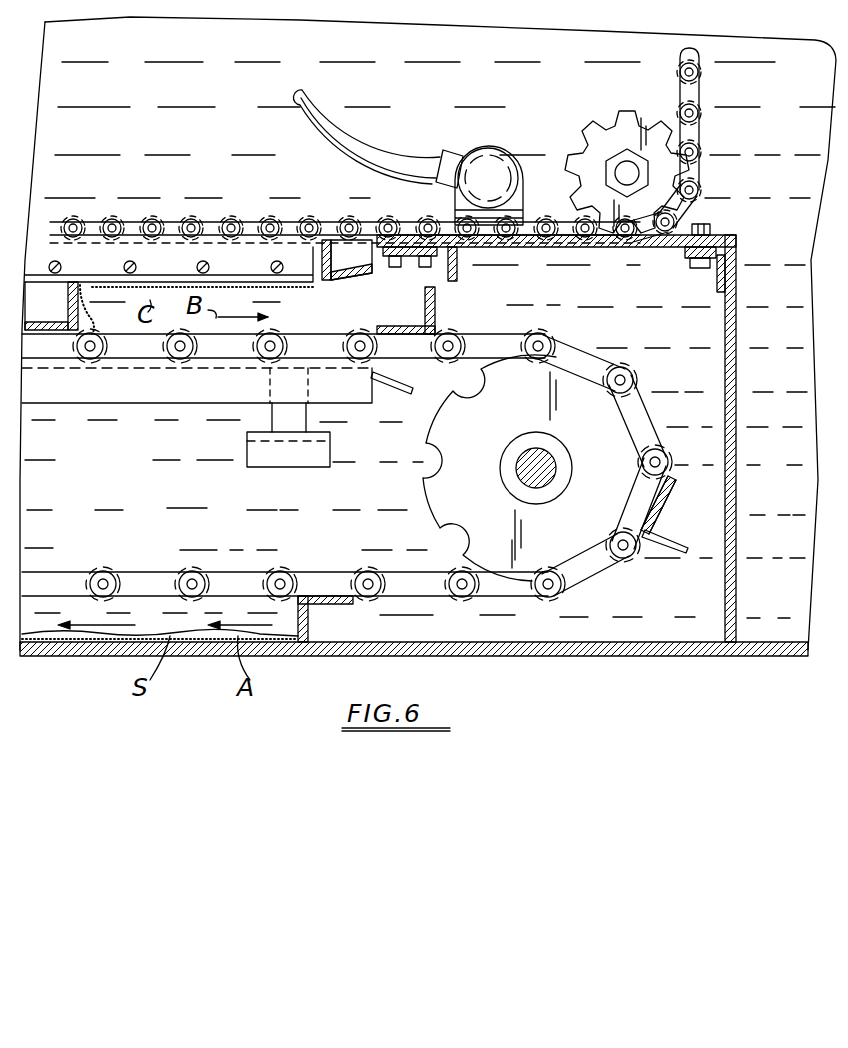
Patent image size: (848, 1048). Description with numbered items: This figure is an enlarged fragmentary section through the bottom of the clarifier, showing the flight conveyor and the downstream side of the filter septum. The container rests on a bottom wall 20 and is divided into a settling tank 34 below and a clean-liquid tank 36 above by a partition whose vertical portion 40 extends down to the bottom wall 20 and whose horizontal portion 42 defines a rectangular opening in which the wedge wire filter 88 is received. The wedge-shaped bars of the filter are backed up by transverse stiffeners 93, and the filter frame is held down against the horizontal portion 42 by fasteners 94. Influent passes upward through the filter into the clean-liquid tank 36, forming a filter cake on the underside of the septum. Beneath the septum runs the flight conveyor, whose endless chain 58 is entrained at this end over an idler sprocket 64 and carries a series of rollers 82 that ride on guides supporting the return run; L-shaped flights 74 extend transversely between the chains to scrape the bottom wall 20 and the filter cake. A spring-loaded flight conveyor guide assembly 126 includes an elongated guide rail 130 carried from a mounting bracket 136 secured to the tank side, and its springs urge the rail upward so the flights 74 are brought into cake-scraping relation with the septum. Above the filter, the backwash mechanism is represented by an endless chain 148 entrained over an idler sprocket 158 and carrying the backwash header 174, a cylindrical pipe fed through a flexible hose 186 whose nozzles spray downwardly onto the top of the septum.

The bottom wall 20 is at (548, 656).
The settling tank 34 is at (175, 491).
The clean-liquid tank 36 is at (237, 139).
The vertical portion of partition 40 is at (737, 597).
The horizontal portion of partition 42 is at (667, 250).
The endless chain 58 is at (65, 580).
The idler sprocket 64 is at (506, 468).
The flights 74 is at (68, 300).
The rollers 82 is at (187, 568).
The wedge wire filter 88 is at (80, 250).
The transverse stiffeners 93 is at (199, 263).
The fasteners 94 is at (396, 240).
The spring-loaded flight conveyor guide assembly 126 is at (145, 405).
The guide rail 130 is at (217, 385).
The mounting bracket 136 is at (272, 467).
The endless chain 148 is at (703, 132).
The idler sprocket 158 is at (605, 120).
The backwash header 174 is at (490, 162).
The flexible hose 186 is at (360, 125).